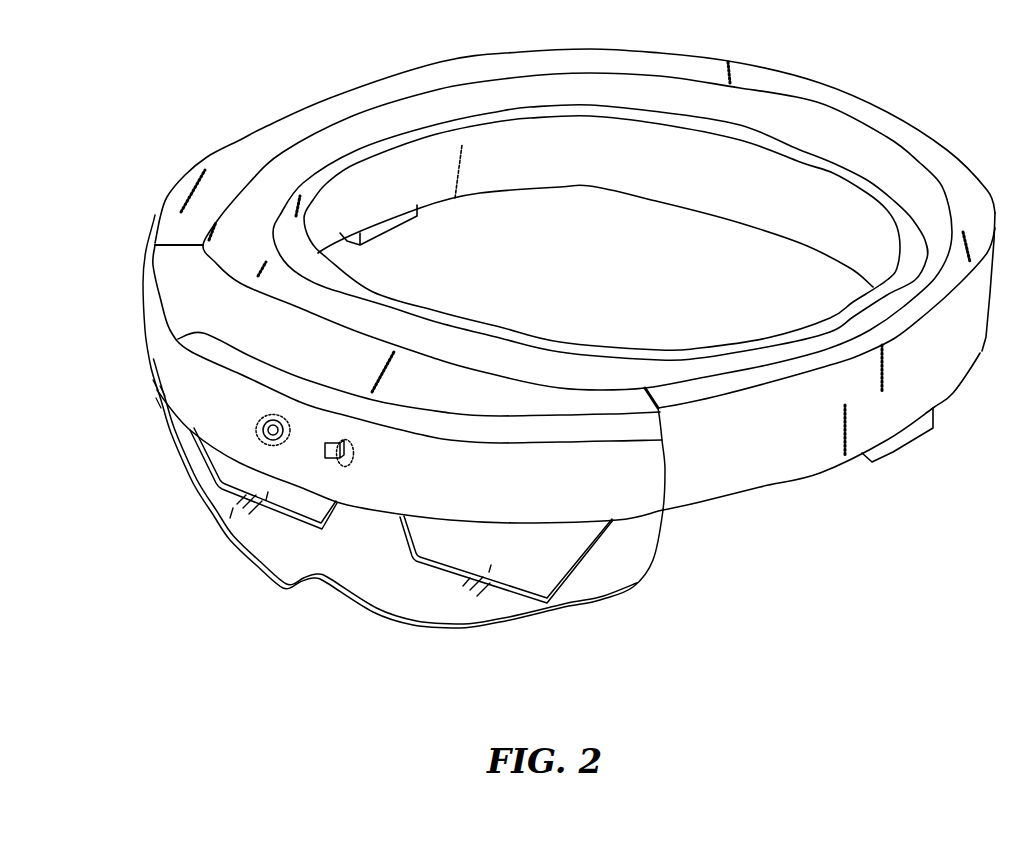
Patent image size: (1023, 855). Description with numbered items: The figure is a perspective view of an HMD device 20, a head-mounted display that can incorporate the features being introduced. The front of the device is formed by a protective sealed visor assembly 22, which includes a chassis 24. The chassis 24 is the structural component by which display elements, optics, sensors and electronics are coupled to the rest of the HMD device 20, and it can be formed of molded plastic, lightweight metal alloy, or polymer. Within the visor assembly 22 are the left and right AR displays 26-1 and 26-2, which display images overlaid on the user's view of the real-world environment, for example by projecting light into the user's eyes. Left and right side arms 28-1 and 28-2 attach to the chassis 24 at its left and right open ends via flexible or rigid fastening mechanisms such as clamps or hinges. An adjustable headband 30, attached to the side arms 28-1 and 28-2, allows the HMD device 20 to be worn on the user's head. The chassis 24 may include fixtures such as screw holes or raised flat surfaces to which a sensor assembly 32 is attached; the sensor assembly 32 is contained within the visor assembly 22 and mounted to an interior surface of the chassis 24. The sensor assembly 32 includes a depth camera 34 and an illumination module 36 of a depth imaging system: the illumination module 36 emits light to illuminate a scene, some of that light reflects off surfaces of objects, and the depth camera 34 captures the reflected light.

The HMD device 20 is at (130, 105).
The visor assembly 22 is at (505, 626).
The chassis 24 is at (165, 289).
The left AR display 26-1 is at (590, 572).
The right AR display 26-2 is at (330, 517).
The left side arm 28-1 is at (773, 482).
The right side arm 28-2 is at (265, 127).
The adjustable headband 30 is at (383, 292).
The sensor assembly 32 is at (340, 467).
The depth camera 34 is at (278, 420).
The illumination module 36 is at (343, 438).